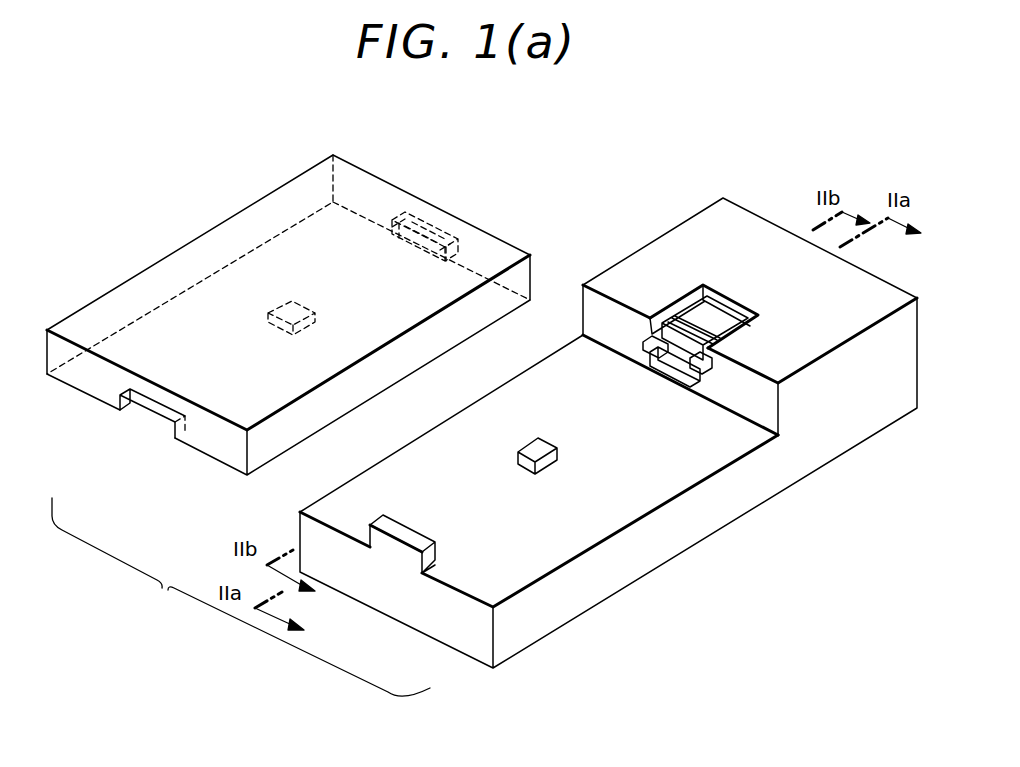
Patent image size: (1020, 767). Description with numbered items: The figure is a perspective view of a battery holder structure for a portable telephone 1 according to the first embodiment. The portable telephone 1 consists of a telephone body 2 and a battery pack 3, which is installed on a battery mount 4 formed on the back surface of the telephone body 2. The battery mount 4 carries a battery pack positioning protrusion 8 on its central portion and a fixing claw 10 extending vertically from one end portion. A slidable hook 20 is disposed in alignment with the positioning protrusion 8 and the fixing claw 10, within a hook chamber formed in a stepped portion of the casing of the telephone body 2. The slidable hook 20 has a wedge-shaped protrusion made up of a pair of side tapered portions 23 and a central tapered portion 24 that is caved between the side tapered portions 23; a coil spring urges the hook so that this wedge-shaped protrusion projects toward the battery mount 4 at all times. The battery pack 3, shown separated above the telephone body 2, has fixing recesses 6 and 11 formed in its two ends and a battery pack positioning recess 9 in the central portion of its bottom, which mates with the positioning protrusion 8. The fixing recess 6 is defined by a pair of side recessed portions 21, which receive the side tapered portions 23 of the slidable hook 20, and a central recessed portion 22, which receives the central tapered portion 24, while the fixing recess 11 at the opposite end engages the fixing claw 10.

The portable telephone 1 is at (241, 597).
The telephone body 2 is at (827, 448).
The battery pack 3 is at (290, 197).
The battery mount 4 is at (662, 470).
The fixing recess 6 is at (423, 219).
The battery pack positioning protrusion 8 is at (545, 455).
The battery pack positioning recess 9 is at (266, 310).
The fixing claw 10 is at (405, 533).
The fixing recess 11 is at (157, 413).
The slidable hook 20 is at (693, 325).
The side recessed portions 21 is at (395, 238).
The central recessed portion 22 is at (415, 242).
The side tapered portions 23 is at (650, 350).
The central tapered portion 24 is at (672, 372).